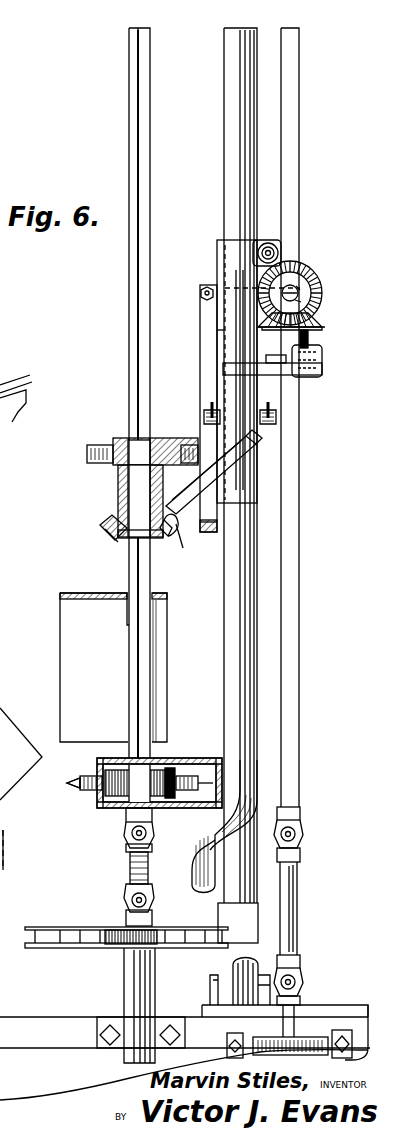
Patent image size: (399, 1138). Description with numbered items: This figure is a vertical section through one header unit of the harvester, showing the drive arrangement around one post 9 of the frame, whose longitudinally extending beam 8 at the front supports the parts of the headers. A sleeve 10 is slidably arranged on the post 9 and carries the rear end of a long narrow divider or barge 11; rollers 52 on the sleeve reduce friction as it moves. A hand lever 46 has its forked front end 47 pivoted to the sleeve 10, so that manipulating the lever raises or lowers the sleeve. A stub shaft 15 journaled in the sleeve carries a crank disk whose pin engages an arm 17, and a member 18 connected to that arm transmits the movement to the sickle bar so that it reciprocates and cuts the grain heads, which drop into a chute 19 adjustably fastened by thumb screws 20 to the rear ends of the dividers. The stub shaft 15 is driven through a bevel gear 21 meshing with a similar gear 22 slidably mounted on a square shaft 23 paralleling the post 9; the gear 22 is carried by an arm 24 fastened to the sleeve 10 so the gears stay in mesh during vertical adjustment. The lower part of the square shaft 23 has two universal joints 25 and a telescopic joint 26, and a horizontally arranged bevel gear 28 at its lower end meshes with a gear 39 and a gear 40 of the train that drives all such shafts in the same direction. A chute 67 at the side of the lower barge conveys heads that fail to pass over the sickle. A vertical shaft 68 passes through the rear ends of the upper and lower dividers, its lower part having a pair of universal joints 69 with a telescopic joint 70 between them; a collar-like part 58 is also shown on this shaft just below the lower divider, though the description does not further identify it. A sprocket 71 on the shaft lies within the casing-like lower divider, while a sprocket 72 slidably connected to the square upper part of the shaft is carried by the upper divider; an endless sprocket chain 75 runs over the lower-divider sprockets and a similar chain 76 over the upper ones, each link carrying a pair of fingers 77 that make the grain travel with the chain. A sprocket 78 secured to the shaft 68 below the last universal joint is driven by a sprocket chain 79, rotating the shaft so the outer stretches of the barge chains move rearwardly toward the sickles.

The longitudinally extending beam 8 is at (55, 1080).
The post 9 is at (236, 127).
The sleeve 10 is at (236, 313).
The divider or barge 11 is at (118, 522).
The stub shaft 15 is at (313, 258).
The arm 17 is at (217, 278).
The member 18 is at (210, 353).
The chute 19 is at (80, 600).
The thumb screws 20 is at (180, 550).
The bevel gear 21 is at (292, 300).
The bevel gear 22 is at (318, 324).
The square shaft 23 is at (304, 222).
The arm 24 is at (322, 366).
The universal joints 25 is at (303, 834).
The telescopic joint 26 is at (297, 924).
The bevel gear 28 is at (312, 1038).
The gear 39 is at (248, 1050).
The gear 40 is at (340, 1036).
The hand lever 46 is at (14, 418).
The forked front end 47 is at (266, 410).
The rollers 52 is at (278, 250).
The collar 58 is at (126, 820).
The chutes 67 is at (210, 832).
The vertical shaft 68 is at (130, 287).
The universal joints 69 is at (128, 838).
The telescopic joint 70 is at (130, 870).
The sprocket 71 is at (184, 758).
The sprocket 72 is at (112, 440).
The endless sprocket chain 75 is at (86, 798).
The chain 76 is at (116, 470).
The fingers 77 is at (87, 456).
The sprocket 78 is at (126, 948).
The sprocket chain 79 is at (58, 950).